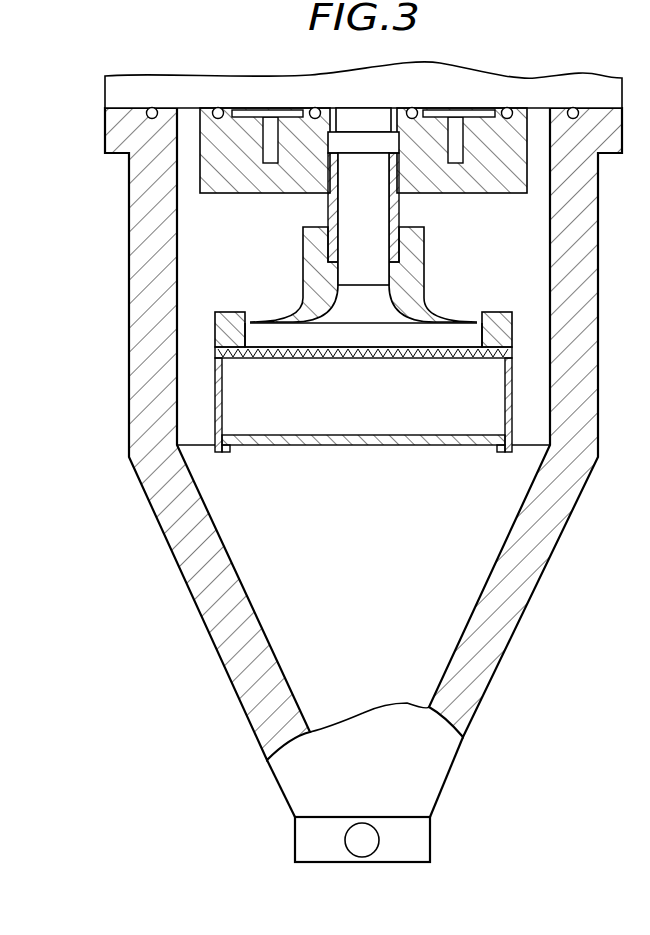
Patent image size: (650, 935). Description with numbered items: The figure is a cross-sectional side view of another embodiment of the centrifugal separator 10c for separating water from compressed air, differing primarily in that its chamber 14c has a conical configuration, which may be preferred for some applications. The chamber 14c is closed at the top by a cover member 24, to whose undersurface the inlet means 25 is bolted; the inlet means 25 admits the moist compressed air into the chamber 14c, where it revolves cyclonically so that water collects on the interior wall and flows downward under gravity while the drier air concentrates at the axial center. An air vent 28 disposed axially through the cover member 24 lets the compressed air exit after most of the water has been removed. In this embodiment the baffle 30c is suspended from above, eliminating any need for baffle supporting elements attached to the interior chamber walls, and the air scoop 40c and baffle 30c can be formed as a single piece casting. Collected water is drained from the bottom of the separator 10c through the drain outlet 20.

The centrifugal separator 10c is at (118, 318).
The chamber 14c is at (382, 592).
The drain outlet 20 is at (362, 848).
The cover member 24 is at (217, 82).
The inlet means 25 is at (250, 182).
The air vent 28 is at (397, 205).
The baffle 30c is at (355, 442).
The air scoop 40c is at (251, 312).